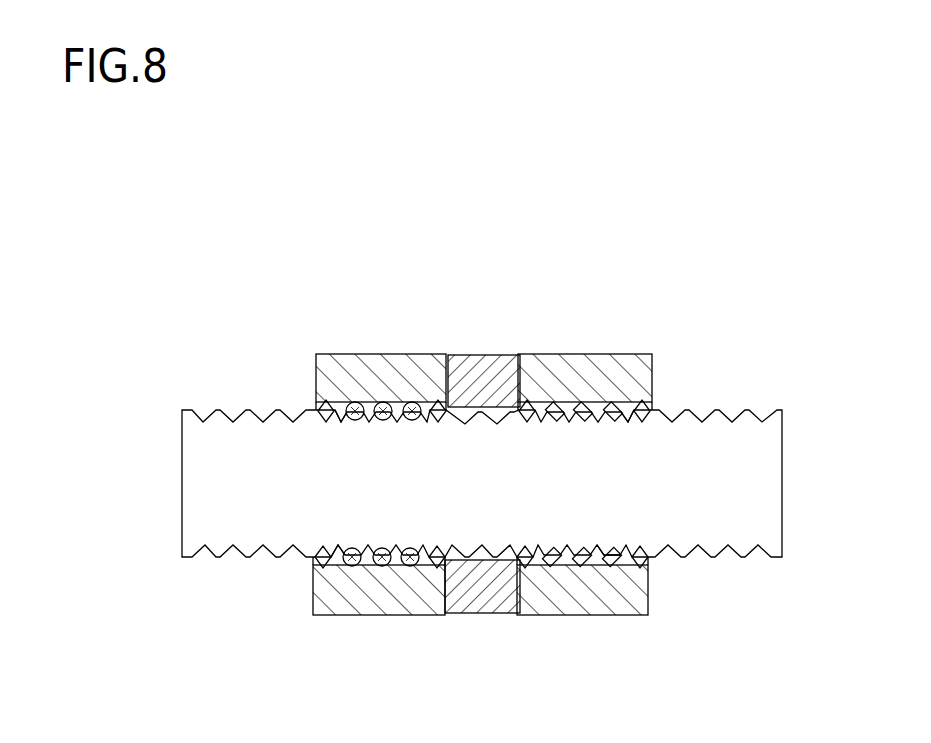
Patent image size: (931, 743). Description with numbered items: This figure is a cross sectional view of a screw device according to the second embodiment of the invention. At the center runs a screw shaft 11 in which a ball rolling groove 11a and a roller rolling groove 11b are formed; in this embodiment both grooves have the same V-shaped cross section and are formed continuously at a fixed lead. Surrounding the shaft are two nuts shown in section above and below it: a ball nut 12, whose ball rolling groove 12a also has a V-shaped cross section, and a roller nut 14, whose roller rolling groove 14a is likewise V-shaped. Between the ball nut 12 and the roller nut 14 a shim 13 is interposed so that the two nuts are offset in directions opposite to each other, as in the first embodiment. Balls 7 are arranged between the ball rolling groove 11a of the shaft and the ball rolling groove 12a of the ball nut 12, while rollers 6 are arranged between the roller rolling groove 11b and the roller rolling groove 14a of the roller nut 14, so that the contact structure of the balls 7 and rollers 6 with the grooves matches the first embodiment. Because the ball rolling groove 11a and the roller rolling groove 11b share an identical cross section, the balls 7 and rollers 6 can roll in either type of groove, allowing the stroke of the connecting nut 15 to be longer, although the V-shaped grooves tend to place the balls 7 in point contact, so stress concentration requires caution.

The rollers 6 is at (586, 400).
The balls 7 is at (383, 402).
The screw shaft 11 is at (729, 424).
The ball rolling groove 11a is at (355, 567).
The roller rolling groove 11b is at (617, 567).
The ball nut 12 is at (428, 354).
The ball rolling groove 12a is at (353, 404).
The shim 13 is at (495, 355).
The roller nut 14 is at (556, 366).
The roller rolling groove 14a is at (628, 396).
The connecting nut 15 is at (463, 348).